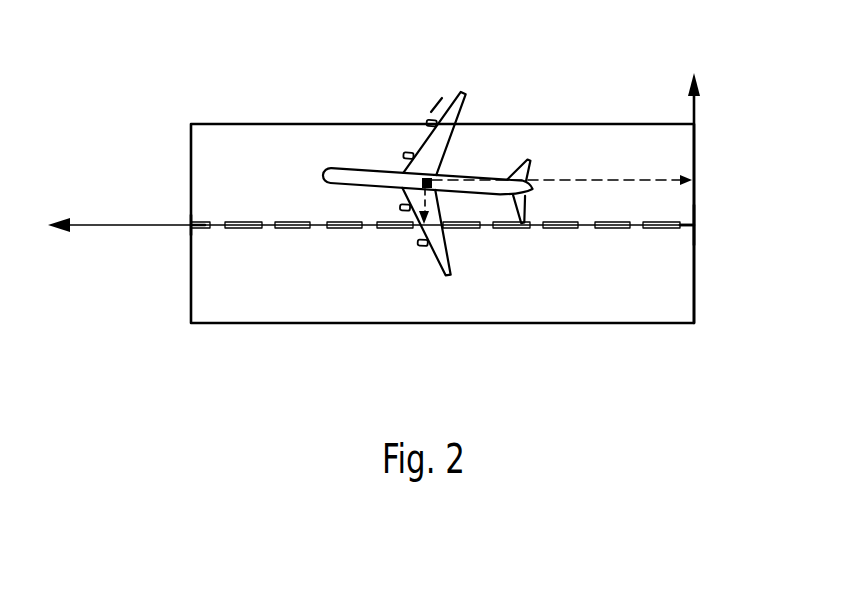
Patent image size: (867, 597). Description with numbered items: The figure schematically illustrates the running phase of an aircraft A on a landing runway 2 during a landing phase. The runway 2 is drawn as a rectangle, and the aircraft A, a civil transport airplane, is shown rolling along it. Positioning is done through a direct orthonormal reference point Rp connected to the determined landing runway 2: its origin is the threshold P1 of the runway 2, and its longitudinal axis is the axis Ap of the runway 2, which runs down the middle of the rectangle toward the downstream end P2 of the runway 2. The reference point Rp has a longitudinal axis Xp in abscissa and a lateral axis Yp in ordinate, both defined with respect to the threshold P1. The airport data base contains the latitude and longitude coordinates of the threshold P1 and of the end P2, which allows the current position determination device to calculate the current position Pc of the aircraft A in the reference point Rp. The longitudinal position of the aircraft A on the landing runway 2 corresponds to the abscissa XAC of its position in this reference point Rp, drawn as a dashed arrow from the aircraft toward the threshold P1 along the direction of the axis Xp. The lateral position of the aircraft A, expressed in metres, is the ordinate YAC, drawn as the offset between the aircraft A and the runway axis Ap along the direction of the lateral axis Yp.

The landing runway 2 is at (532, 323).
The aircraft A is at (355, 167).
The longitudinal axis Xp is at (371, 208).
The lateral axis Yp is at (713, 198).
The axis of the runway Ap is at (237, 232).
The threshold of the runway P1 is at (698, 228).
The end of the runway P2 is at (190, 222).
The reference point Rp is at (708, 216).
The current position of the aircraft Pc is at (431, 112).
The abscissa of the aircraft position XAC is at (543, 180).
The lateral position of the aircraft YAC is at (420, 198).